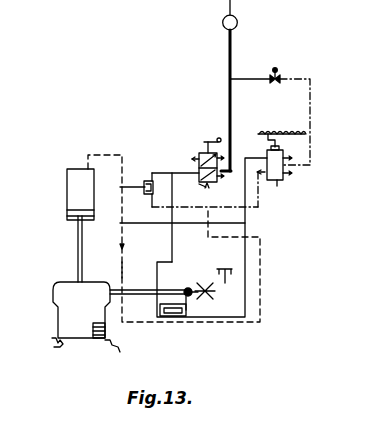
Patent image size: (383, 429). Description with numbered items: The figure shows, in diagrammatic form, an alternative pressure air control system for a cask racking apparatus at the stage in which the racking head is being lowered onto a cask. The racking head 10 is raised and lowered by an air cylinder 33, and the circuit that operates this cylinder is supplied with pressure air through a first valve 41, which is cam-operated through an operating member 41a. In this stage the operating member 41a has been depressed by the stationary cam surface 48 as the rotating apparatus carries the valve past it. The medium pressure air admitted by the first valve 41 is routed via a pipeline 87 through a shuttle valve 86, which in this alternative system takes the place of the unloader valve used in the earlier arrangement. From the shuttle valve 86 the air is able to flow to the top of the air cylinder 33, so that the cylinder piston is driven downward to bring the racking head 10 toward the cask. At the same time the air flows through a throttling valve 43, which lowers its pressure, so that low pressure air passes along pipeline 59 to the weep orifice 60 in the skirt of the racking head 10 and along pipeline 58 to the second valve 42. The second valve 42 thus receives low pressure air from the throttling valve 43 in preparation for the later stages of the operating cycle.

The racking head 10 is at (73, 310).
The air cylinder 33 is at (78, 192).
The first valve 41 is at (278, 182).
The operating member 41a is at (283, 136).
The second valve 42 is at (208, 141).
The throttling valve 43 is at (124, 247).
The cam surface 48 is at (268, 131).
The pipeline 58 is at (262, 280).
The pipeline 59 is at (121, 272).
The weep orifice 60 is at (94, 338).
The shuttle valve 86 is at (145, 181).
The pipeline 87 is at (205, 189).